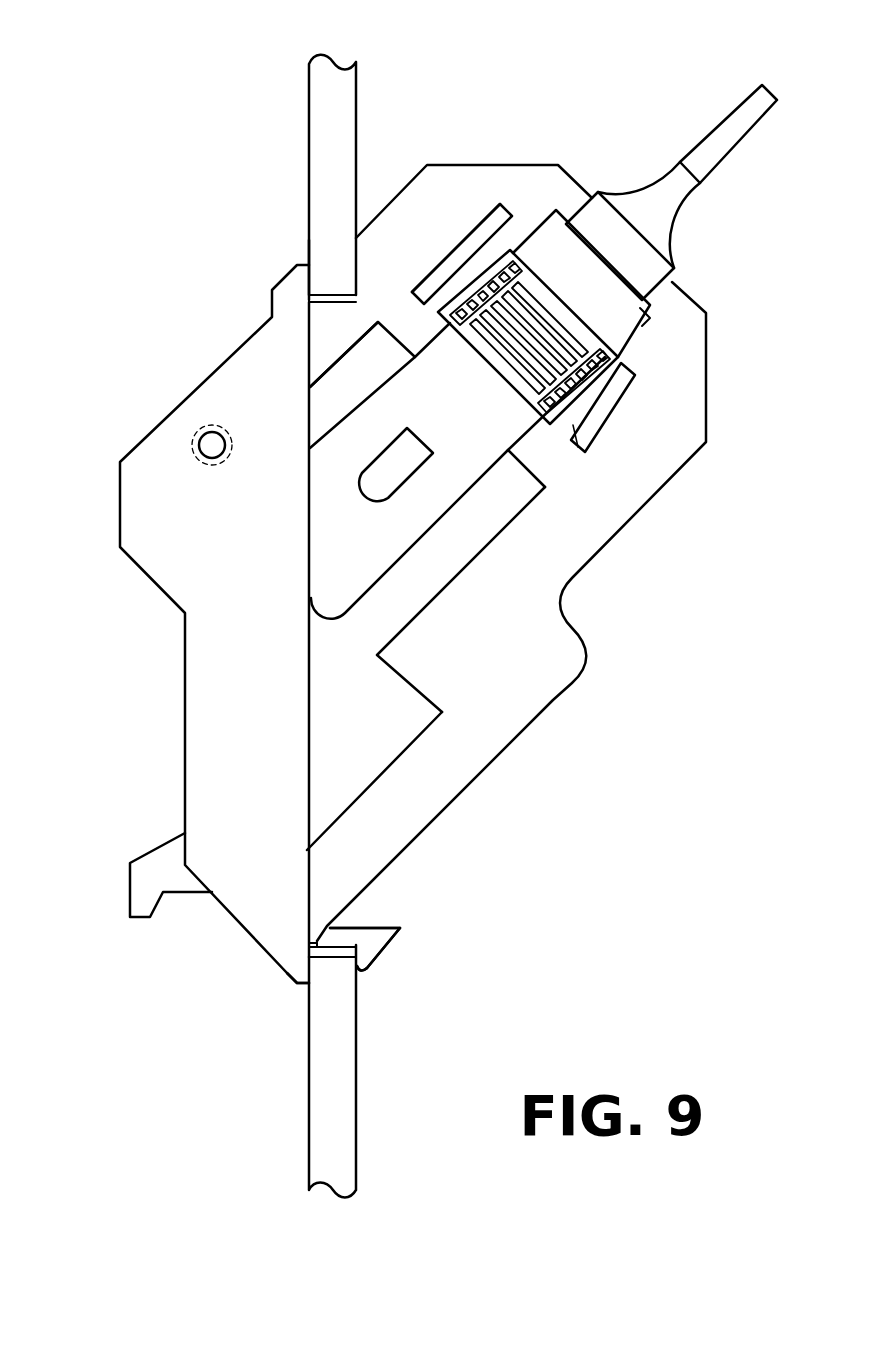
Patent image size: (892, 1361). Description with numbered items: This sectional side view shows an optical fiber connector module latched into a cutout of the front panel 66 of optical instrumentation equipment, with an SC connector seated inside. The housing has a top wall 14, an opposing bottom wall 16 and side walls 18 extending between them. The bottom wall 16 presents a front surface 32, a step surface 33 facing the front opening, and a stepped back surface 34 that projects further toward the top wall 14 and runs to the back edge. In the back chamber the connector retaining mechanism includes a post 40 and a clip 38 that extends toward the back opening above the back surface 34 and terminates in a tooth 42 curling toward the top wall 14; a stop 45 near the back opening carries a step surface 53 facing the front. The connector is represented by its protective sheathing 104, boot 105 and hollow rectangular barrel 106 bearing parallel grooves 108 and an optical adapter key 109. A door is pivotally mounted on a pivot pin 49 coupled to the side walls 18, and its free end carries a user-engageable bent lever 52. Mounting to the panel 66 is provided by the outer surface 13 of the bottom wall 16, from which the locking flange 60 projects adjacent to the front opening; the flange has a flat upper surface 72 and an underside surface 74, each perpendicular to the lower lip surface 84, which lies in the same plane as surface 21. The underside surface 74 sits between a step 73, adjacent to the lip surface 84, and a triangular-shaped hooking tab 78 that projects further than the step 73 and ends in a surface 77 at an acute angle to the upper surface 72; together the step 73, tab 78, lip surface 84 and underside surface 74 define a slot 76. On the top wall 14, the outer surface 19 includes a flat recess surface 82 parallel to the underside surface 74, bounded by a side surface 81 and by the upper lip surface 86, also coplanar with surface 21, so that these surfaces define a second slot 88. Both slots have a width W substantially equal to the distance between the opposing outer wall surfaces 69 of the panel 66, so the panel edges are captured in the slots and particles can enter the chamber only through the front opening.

The outer surface 13 is at (549, 748).
The top wall 14 is at (462, 248).
The bottom wall 16 is at (440, 781).
The side walls 18 is at (214, 624).
The outer surface 19 is at (512, 165).
The surface 21 is at (308, 630).
The front surface 32 is at (362, 792).
The step surface 33 is at (404, 695).
The stepped back surface 34 is at (432, 600).
The clip 38 is at (583, 447).
The post 40 is at (533, 462).
The tooth 42 is at (617, 366).
The stop 45 is at (670, 297).
The pivot pin 49 is at (213, 430).
The bent lever 52 is at (133, 903).
The step surface 53 is at (648, 313).
The locking flange 60 is at (406, 938).
The front panel 66 is at (384, 76).
The outer wall surfaces 69 is at (357, 136).
The upper surface 72 is at (357, 925).
The step 73 is at (311, 940).
The underside surface 74 is at (362, 948).
The slot 76 is at (337, 958).
The surface 77 is at (402, 953).
The triangular-shaped hooking tab 78 is at (372, 952).
The side surface 81 is at (356, 290).
The flat recess surface 82 is at (305, 333).
The lower lip surface 84 is at (302, 972).
The upper lip surface 86 is at (309, 272).
The slot 88 is at (333, 280).
The protective sheathing 104 is at (730, 140).
The boot 105 is at (638, 198).
The barrel 106 is at (510, 386).
The parallel grooves 108 is at (518, 333).
The optical adapter key 109 is at (398, 468).
The width W is at (240, 1075).